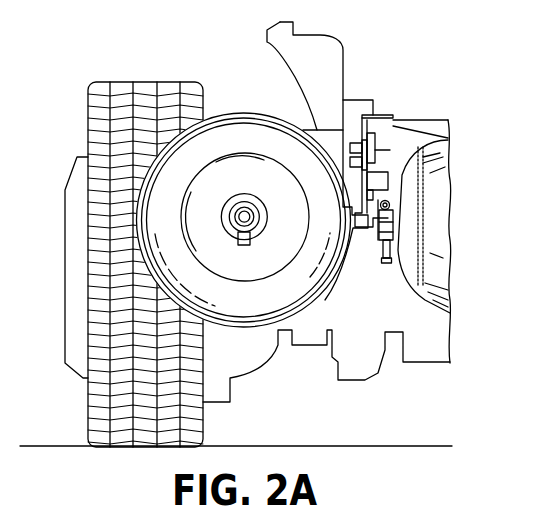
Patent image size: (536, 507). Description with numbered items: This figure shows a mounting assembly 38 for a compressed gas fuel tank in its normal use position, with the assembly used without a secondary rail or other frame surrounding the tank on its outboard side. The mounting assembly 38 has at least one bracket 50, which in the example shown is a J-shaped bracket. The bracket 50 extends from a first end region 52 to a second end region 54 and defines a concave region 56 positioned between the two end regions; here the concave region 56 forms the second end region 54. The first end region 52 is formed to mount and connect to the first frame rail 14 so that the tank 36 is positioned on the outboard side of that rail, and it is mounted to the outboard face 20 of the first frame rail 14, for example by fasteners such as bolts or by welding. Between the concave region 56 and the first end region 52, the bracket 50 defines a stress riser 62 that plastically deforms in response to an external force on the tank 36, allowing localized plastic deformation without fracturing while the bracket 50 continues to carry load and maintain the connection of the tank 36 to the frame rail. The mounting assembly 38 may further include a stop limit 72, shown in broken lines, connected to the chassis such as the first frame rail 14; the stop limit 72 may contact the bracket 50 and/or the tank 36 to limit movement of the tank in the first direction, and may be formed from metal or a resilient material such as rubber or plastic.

The first frame rail 14 is at (380, 113).
The outboard face 20 is at (365, 128).
The tank 36 is at (240, 113).
The mounting assembly 38 is at (348, 300).
The bracket 50 is at (320, 296).
The first end region 52 is at (397, 182).
The second end region 54 is at (158, 268).
The concave region 56 is at (247, 328).
The stress riser 62 is at (410, 293).
The stop limit 72 is at (400, 253).